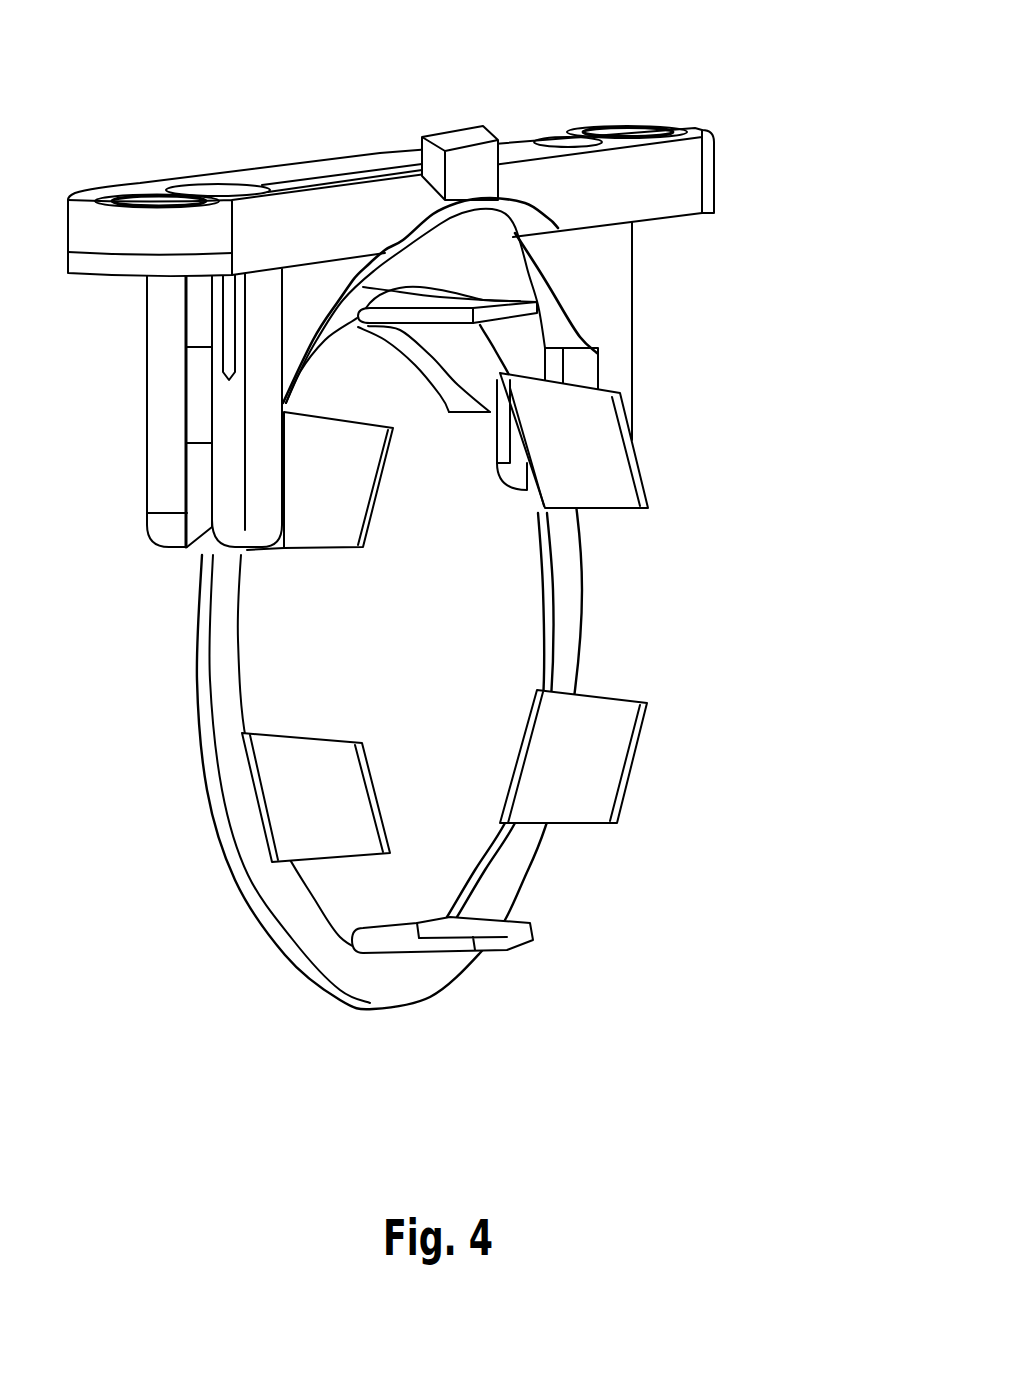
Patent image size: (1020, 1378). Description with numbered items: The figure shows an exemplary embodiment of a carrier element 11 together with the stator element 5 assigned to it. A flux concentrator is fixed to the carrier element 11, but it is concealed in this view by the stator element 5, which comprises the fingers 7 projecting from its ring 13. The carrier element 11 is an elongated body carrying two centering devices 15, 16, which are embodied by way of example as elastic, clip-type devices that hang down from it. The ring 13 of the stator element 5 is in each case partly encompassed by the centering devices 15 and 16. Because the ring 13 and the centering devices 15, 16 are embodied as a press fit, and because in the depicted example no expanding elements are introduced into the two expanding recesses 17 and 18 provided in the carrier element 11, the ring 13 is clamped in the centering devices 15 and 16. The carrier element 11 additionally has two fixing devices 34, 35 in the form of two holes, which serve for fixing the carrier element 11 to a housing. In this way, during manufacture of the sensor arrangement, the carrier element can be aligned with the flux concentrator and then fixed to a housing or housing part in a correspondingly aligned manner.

The stator element 5 is at (244, 806).
The fingers 7 is at (343, 496).
The carrier element 11 is at (452, 139).
The ring 13 is at (196, 672).
The centering device 15 is at (205, 470).
The centering device 16 is at (563, 368).
The expanding recess 17 is at (200, 187).
The expanding recess 18 is at (563, 142).
The fixing device 34 is at (149, 195).
The fixing device 35 is at (627, 130).